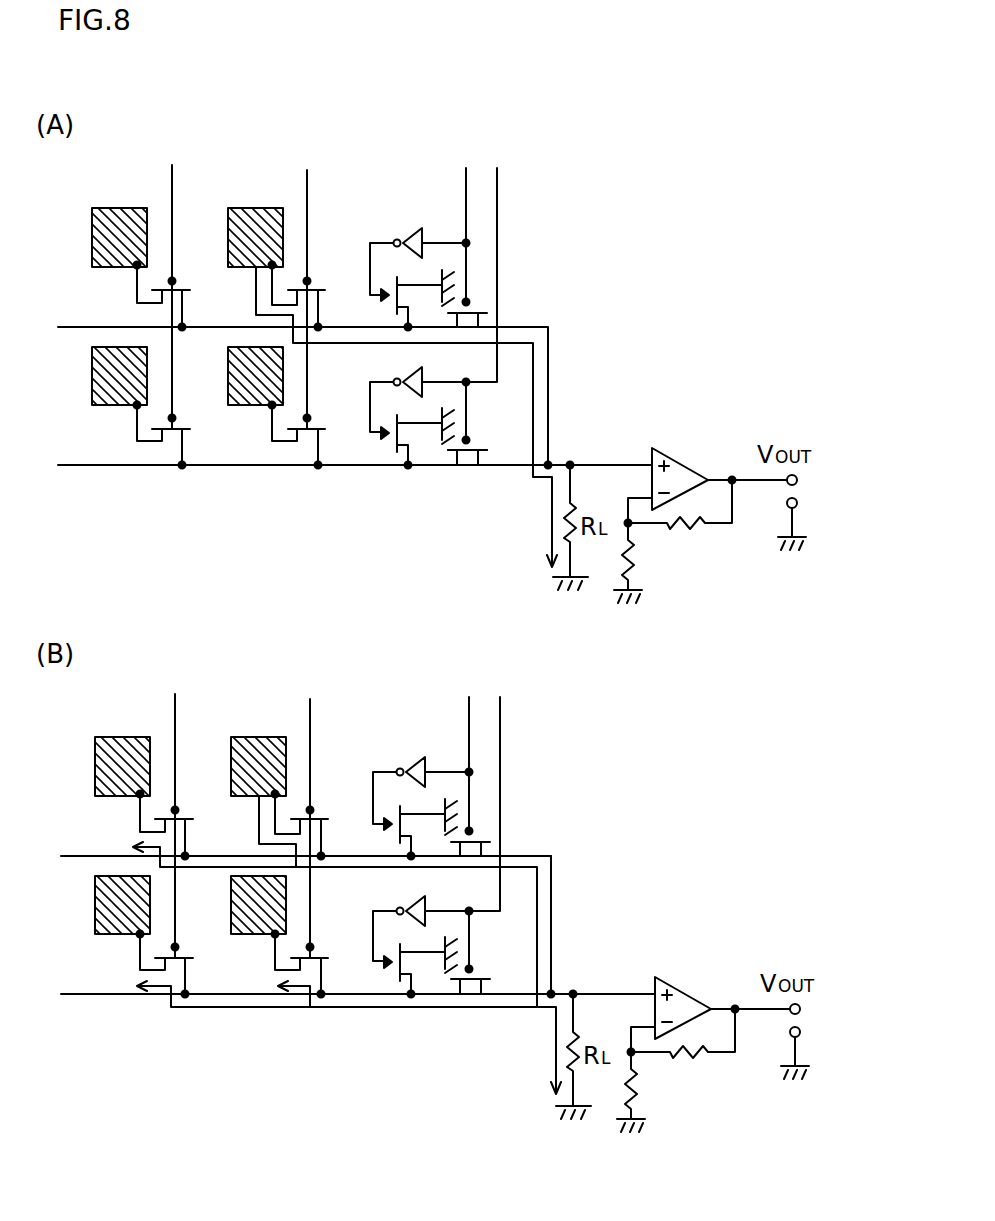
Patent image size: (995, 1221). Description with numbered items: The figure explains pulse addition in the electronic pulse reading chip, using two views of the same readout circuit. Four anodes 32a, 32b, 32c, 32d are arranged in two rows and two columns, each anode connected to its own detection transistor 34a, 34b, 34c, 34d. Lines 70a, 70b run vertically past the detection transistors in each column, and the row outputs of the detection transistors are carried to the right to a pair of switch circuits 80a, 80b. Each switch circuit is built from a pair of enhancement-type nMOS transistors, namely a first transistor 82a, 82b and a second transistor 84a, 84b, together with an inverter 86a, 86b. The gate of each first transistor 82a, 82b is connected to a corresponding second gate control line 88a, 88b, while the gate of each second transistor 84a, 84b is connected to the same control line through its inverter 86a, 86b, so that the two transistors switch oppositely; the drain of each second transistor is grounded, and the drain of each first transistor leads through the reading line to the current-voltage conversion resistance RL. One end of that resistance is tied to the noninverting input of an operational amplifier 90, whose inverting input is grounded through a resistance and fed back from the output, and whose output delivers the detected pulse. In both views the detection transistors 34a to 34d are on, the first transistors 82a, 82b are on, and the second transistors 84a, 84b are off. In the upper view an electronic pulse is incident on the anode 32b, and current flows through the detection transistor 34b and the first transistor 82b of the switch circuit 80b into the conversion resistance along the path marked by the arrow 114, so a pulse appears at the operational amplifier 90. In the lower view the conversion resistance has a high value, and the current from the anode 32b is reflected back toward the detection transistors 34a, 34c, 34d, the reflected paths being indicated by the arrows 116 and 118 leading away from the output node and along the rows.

The anode 32a is at (92, 235).
The anode 32b is at (270, 207).
The anode 32c is at (92, 374).
The anode 32d is at (250, 407).
The detection transistor 34a is at (140, 274).
The detection transistor 34b is at (318, 276).
The detection transistor 34c is at (140, 414).
The detection transistor 34d is at (316, 444).
The gate (scan) line 70a is at (172, 168).
The gate (scan) line 70b is at (307, 172).
The switch circuit 80a is at (422, 737).
The switch circuit 80b is at (476, 591).
The first transistor 82a is at (482, 446).
The first transistor 82b is at (485, 300).
The second transistor 84a is at (407, 452).
The second transistor 84b is at (405, 277).
The inverter 86a is at (403, 910).
The inverter 86b is at (402, 228).
The second gate control line 88a is at (497, 172).
The second gate control line 88b is at (466, 169).
The operational amplifier 90 is at (686, 468).
The arrow 114 is at (548, 496).
The signal current path 116 is at (218, 1012).
The signal current path 118 is at (551, 958).